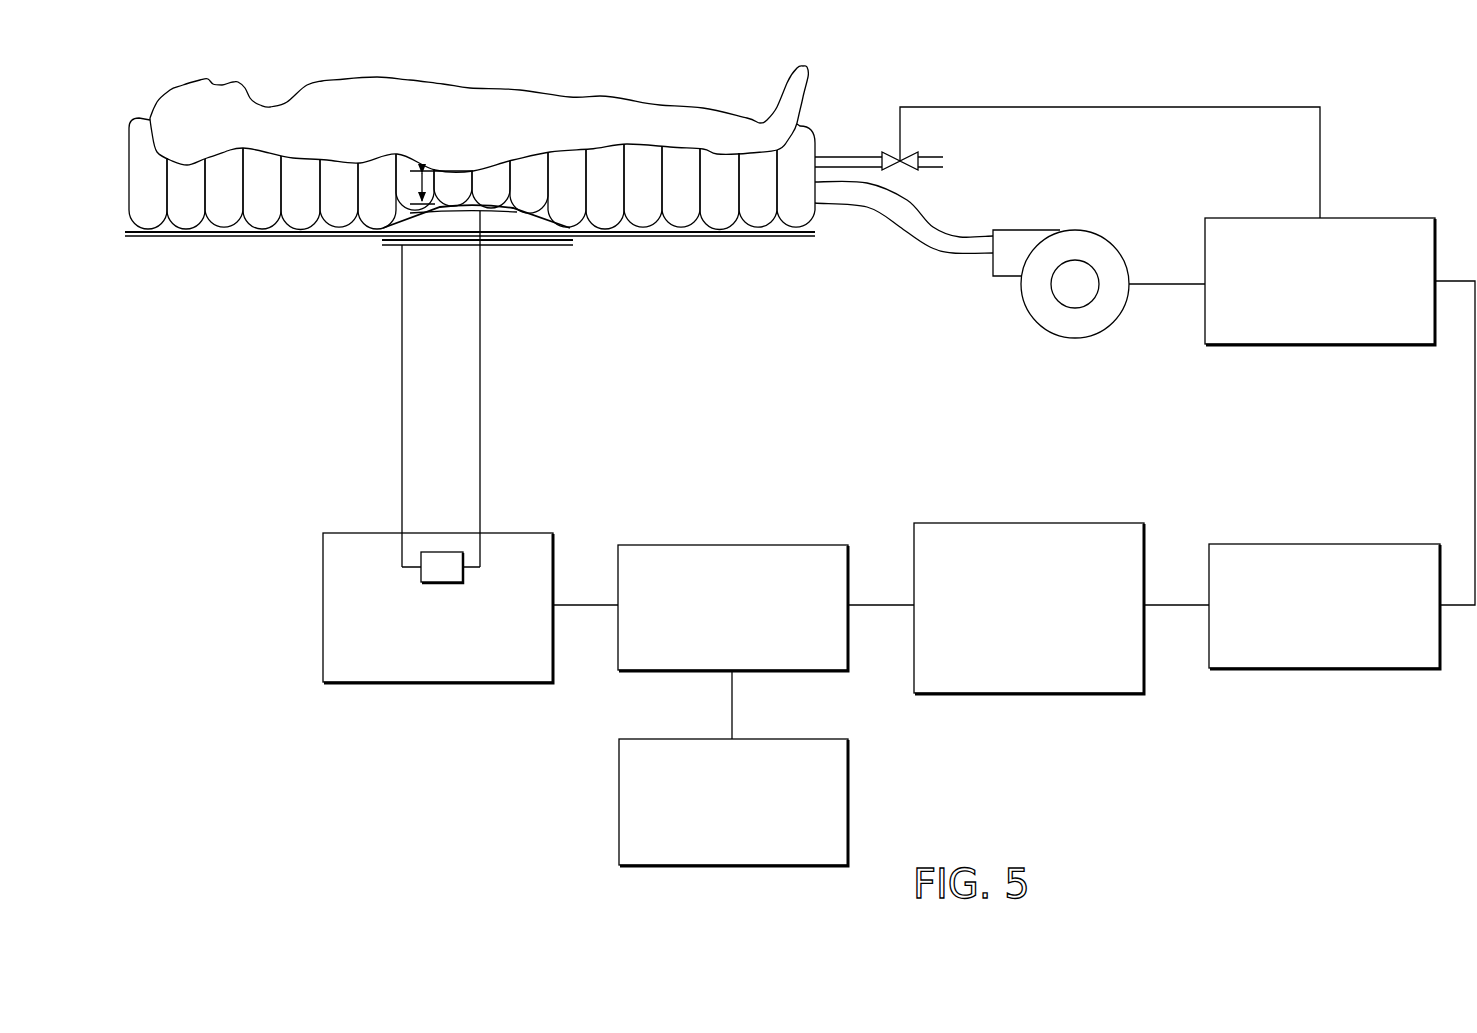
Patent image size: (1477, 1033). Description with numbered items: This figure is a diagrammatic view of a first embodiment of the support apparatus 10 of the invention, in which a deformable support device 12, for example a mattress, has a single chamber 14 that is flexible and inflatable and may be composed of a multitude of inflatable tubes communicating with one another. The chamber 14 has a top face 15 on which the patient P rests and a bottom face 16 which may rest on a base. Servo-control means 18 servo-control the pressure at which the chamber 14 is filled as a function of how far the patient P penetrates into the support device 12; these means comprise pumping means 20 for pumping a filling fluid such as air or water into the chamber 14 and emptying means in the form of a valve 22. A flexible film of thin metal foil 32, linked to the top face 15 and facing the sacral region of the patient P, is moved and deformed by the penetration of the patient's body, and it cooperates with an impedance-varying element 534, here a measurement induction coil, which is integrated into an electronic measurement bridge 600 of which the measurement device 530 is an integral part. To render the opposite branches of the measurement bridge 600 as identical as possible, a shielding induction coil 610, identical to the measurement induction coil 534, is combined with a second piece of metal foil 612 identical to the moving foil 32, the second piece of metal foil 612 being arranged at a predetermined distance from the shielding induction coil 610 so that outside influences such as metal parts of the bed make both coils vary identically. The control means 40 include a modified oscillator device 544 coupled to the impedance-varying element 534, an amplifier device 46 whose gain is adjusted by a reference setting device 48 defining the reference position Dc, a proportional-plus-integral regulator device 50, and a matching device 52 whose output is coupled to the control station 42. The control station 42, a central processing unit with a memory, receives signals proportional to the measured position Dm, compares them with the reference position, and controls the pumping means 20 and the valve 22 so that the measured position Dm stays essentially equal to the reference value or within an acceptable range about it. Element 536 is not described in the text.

The patient P is at (331, 107).
The measured position Dm is at (413, 187).
The support apparatus 10 is at (547, 745).
The deformable support device 12 is at (221, 245).
The chamber 14 is at (472, 199).
The top face 15 is at (693, 157).
The bottom face 16 is at (648, 227).
The servo-control means 18 is at (1064, 323).
The pumping means 20 is at (1097, 244).
The valve 22 is at (890, 152).
The metal element 32 is at (496, 166).
The control means 40 is at (1055, 713).
The control station 42 is at (1305, 295).
The amplifier device 46 is at (718, 619).
The reference setting device 48 is at (717, 801).
The proportional-plus-integral regulator device 50 is at (1014, 619).
The matching device 52 is at (1310, 618).
The measurement device 530 is at (355, 256).
The impedance-varying element 534 is at (445, 209).
The sensor lower layer 536 is at (525, 220).
The oscillator device 544 is at (418, 708).
The measurement bridge 600 is at (444, 568).
The shielding induction coil 610 is at (485, 247).
The second piece of metal foil 612 is at (460, 247).